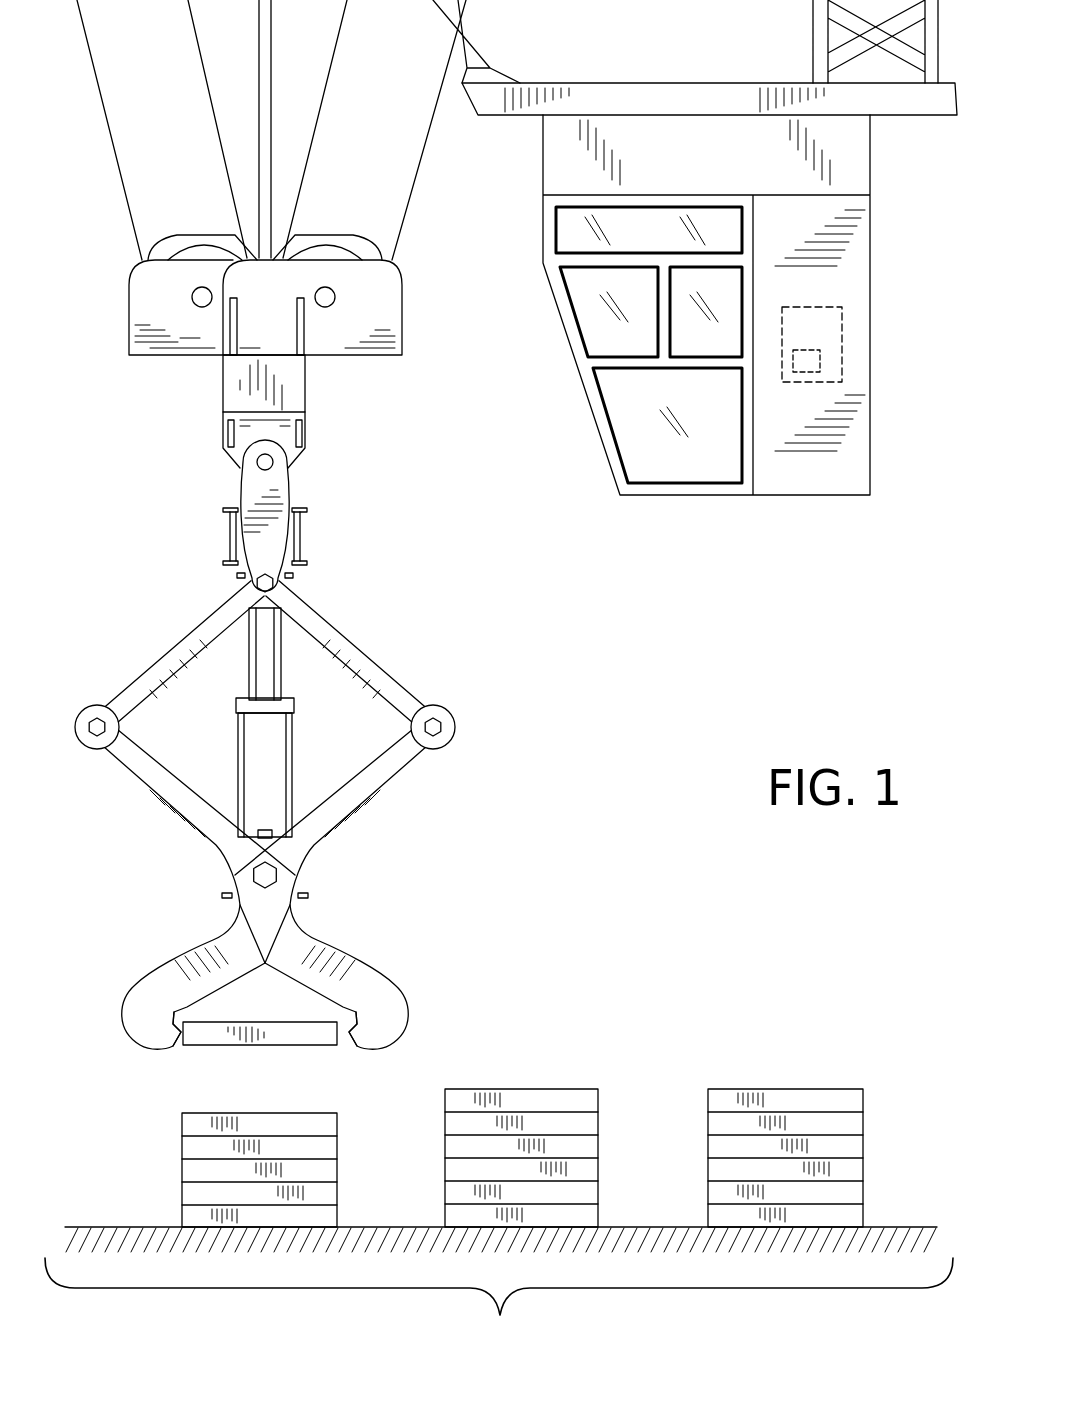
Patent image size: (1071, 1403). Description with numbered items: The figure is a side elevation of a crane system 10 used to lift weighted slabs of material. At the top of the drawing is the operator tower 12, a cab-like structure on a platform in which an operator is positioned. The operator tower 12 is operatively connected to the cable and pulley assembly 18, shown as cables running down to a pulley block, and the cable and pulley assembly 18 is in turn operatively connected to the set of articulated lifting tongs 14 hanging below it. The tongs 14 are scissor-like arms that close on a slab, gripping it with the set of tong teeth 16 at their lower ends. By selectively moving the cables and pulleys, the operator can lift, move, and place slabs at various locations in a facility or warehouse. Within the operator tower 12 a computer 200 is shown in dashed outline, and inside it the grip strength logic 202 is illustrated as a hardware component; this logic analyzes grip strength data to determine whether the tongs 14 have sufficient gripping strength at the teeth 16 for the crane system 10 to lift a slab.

The crane system 10 is at (627, 896).
The operator tower 12 is at (785, 496).
The set of articulated lifting tongs 14 is at (167, 950).
The set of tong teeth 16 is at (177, 1032).
The cable and pulley assembly 18 is at (362, 356).
The computer 200 is at (827, 328).
The grip strength logic 202 is at (815, 362).